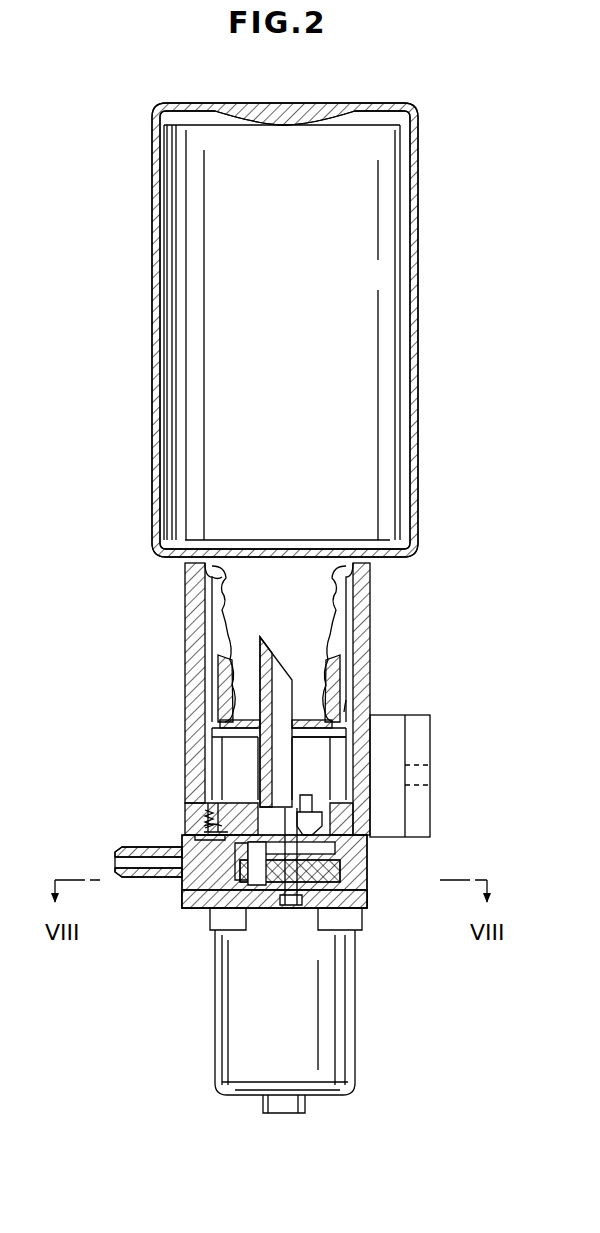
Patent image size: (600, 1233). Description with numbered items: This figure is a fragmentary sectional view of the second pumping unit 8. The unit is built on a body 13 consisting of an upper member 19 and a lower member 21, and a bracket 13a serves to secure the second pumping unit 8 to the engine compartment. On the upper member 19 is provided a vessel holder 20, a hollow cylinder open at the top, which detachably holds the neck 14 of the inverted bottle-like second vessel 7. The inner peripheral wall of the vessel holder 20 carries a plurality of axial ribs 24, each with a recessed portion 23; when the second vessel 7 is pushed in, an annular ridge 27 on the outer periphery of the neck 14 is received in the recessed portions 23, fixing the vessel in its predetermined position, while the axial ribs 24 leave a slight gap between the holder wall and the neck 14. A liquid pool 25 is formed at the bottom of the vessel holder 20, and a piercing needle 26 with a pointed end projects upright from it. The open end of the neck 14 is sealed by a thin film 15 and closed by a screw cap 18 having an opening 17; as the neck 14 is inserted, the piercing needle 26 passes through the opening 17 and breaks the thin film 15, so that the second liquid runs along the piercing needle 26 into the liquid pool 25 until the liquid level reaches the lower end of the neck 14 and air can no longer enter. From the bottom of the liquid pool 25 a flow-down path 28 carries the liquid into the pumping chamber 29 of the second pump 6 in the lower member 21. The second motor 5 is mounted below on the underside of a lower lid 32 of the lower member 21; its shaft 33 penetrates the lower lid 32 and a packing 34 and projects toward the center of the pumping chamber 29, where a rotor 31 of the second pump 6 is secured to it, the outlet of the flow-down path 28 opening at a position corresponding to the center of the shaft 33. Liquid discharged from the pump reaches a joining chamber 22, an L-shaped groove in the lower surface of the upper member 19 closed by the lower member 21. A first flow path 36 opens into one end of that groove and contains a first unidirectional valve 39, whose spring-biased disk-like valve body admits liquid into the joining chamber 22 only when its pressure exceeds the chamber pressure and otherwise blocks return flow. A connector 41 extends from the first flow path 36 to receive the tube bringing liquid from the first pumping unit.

The second motor 5 is at (338, 990).
The second pump 6 is at (341, 870).
The second vessel 7 is at (411, 323).
The second pumping unit 8 is at (269, 330).
The body 13 is at (149, 816).
The bracket 13a is at (420, 722).
The neck 14 is at (355, 623).
The thin film 15 is at (222, 722).
The opening 17 is at (240, 740).
The screw cap 18 is at (346, 695).
The upper member 19 is at (200, 814).
The vessel holder 20 is at (185, 575).
The lower member 21 is at (198, 840).
The joining chamber 22 is at (246, 800).
The recessed portion 23 is at (222, 578).
The axial ribs 24 is at (350, 640).
The liquid pool 25 is at (330, 754).
The piercing needle 26 is at (268, 652).
The annular ridge 27 is at (212, 600).
The flow-down path 28 is at (312, 810).
The pumping chamber 29 is at (325, 848).
The rotor 31 is at (330, 875).
The lower lid 32 is at (362, 903).
The shaft 33 is at (290, 908).
The packing 34 is at (252, 908).
The first flow path 36 is at (195, 908).
The first unidirectional valve 39 is at (212, 815).
The connector 41 is at (150, 873).